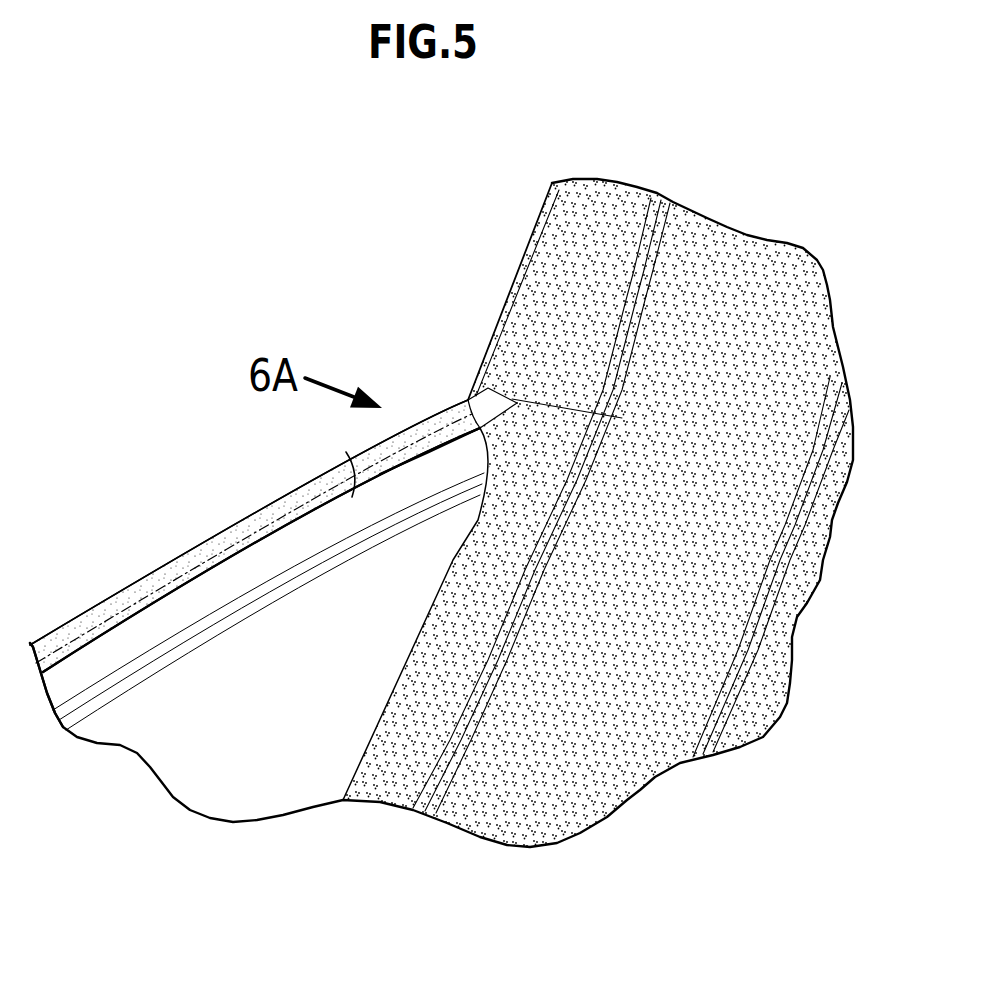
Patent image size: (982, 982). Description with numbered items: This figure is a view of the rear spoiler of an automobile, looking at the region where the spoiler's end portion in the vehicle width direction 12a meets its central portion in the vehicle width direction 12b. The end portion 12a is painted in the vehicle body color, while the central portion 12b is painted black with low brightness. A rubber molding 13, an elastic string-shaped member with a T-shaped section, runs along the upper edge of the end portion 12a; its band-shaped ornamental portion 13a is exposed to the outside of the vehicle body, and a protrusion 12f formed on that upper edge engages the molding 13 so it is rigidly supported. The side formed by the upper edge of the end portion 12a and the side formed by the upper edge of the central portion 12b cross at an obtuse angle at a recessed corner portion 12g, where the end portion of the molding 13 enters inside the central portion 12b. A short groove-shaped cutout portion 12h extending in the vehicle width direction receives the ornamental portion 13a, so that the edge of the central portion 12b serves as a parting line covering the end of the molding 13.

The end portion in the vehicle width direction 12a is at (377, 458).
The central portion in the vehicle width direction 12b is at (524, 248).
The protrusion 12f is at (423, 443).
The recessed corner portion 12g is at (460, 437).
The cutout portion 12h is at (588, 417).
The molding 13 is at (128, 580).
The ornamental portion 13a is at (212, 542).